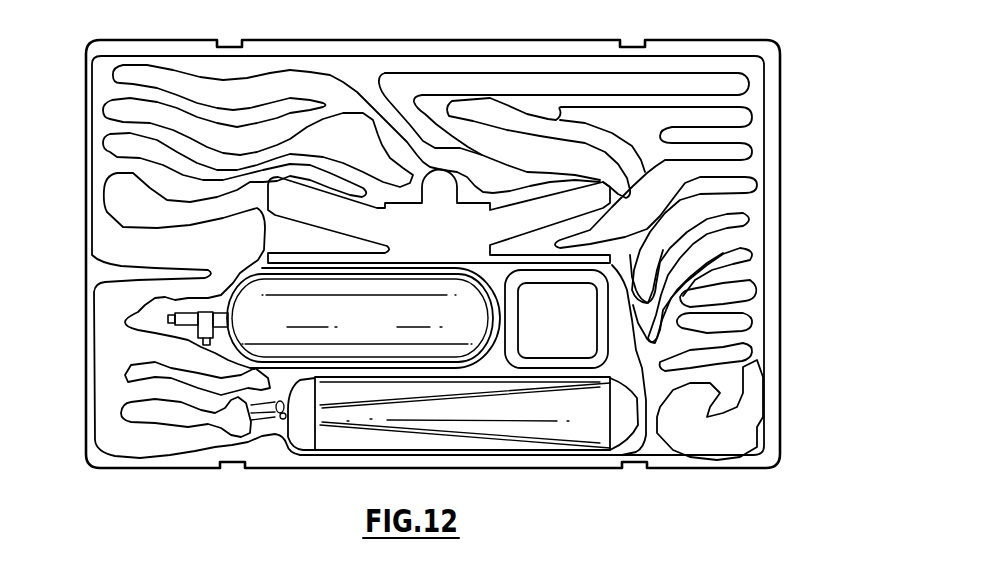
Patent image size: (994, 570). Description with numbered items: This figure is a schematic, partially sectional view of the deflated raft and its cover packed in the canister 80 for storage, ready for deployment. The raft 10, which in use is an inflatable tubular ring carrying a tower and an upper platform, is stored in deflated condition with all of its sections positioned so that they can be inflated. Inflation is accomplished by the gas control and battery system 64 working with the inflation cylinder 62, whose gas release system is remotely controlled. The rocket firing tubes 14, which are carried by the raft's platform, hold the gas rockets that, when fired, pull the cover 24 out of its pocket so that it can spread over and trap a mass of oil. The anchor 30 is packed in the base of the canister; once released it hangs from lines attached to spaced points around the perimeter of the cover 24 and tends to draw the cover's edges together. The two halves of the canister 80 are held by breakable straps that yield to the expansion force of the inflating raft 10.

The raft 10 is at (86, 320).
The rocket firing tubes 14 is at (453, 243).
The cover 24 is at (364, 147).
The anchor 30 is at (373, 440).
The inflation cylinder 62 is at (376, 330).
The gas control and battery system 64 is at (576, 336).
The canister 80 is at (806, 203).